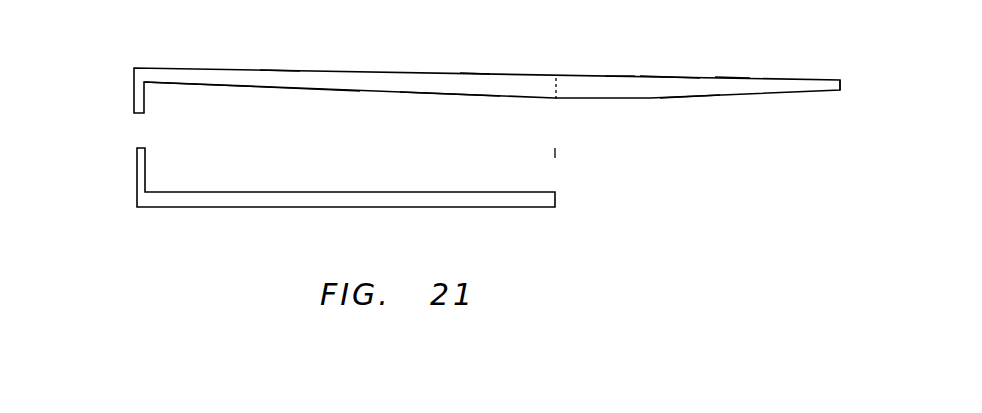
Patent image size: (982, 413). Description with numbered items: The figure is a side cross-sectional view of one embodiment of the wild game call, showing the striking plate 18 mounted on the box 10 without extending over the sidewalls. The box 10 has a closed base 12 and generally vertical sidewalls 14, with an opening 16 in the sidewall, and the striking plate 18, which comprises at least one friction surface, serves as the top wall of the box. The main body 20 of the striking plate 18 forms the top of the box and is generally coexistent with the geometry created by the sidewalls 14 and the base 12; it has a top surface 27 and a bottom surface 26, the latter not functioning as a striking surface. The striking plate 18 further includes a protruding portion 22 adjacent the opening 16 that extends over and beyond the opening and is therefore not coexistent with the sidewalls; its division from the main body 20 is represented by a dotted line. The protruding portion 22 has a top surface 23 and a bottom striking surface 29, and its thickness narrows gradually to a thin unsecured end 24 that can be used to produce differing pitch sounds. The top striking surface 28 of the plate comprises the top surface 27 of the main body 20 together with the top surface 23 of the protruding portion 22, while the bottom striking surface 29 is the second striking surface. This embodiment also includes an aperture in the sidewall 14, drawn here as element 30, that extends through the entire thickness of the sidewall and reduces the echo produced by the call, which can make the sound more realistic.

The box 10 is at (348, 153).
The closed base 12 is at (256, 198).
The sidewalls 14 is at (140, 93).
The opening 16 is at (555, 148).
The striking plate 18 is at (522, 90).
The main body 20 is at (361, 83).
The protruding portion 22 is at (653, 88).
The top surface of the protruding portion 23 is at (731, 76).
The thin unsecured end 24 is at (842, 83).
The bottom surface of the main body 26 is at (457, 96).
The top surface of the main body 27 is at (278, 67).
The top striking surface 28 is at (480, 65).
The bottom striking surface 29 is at (690, 98).
The gap 30 is at (140, 131).